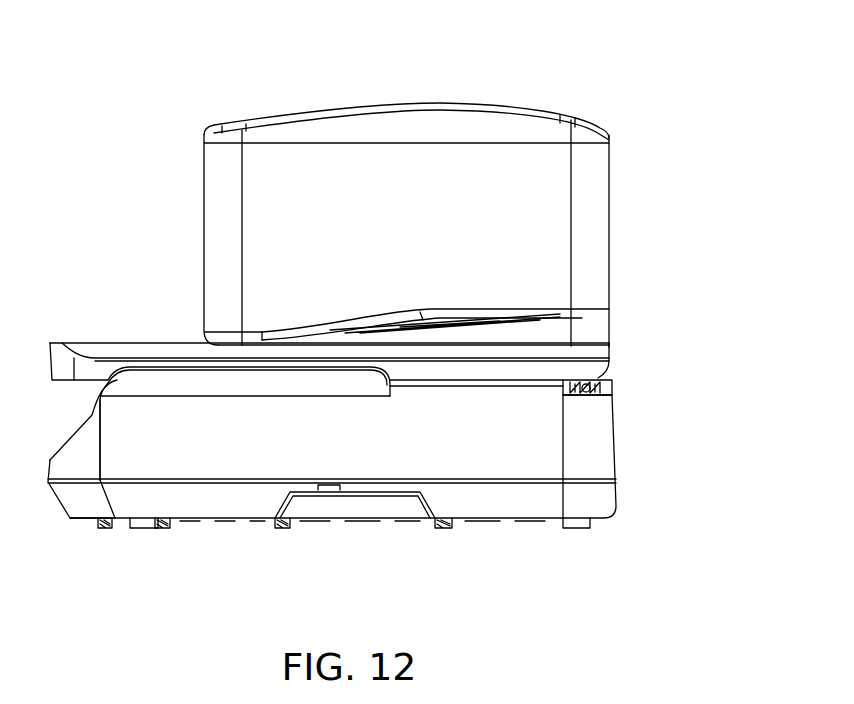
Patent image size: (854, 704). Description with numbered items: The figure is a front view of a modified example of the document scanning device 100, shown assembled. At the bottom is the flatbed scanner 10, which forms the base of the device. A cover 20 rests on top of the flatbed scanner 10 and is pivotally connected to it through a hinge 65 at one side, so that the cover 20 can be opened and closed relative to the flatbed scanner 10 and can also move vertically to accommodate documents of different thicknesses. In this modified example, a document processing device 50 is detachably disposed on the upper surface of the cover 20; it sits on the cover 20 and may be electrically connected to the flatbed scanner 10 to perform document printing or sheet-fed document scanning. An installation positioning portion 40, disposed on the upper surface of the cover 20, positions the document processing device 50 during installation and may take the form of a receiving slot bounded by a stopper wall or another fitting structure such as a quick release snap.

The document scanning device 100 is at (298, 54).
The flatbed scanner 10 is at (612, 428).
The cover 20 is at (143, 343).
The installation positioning portion 40 is at (597, 322).
The document processing device 50 is at (203, 199).
The hinge 65 is at (612, 372).